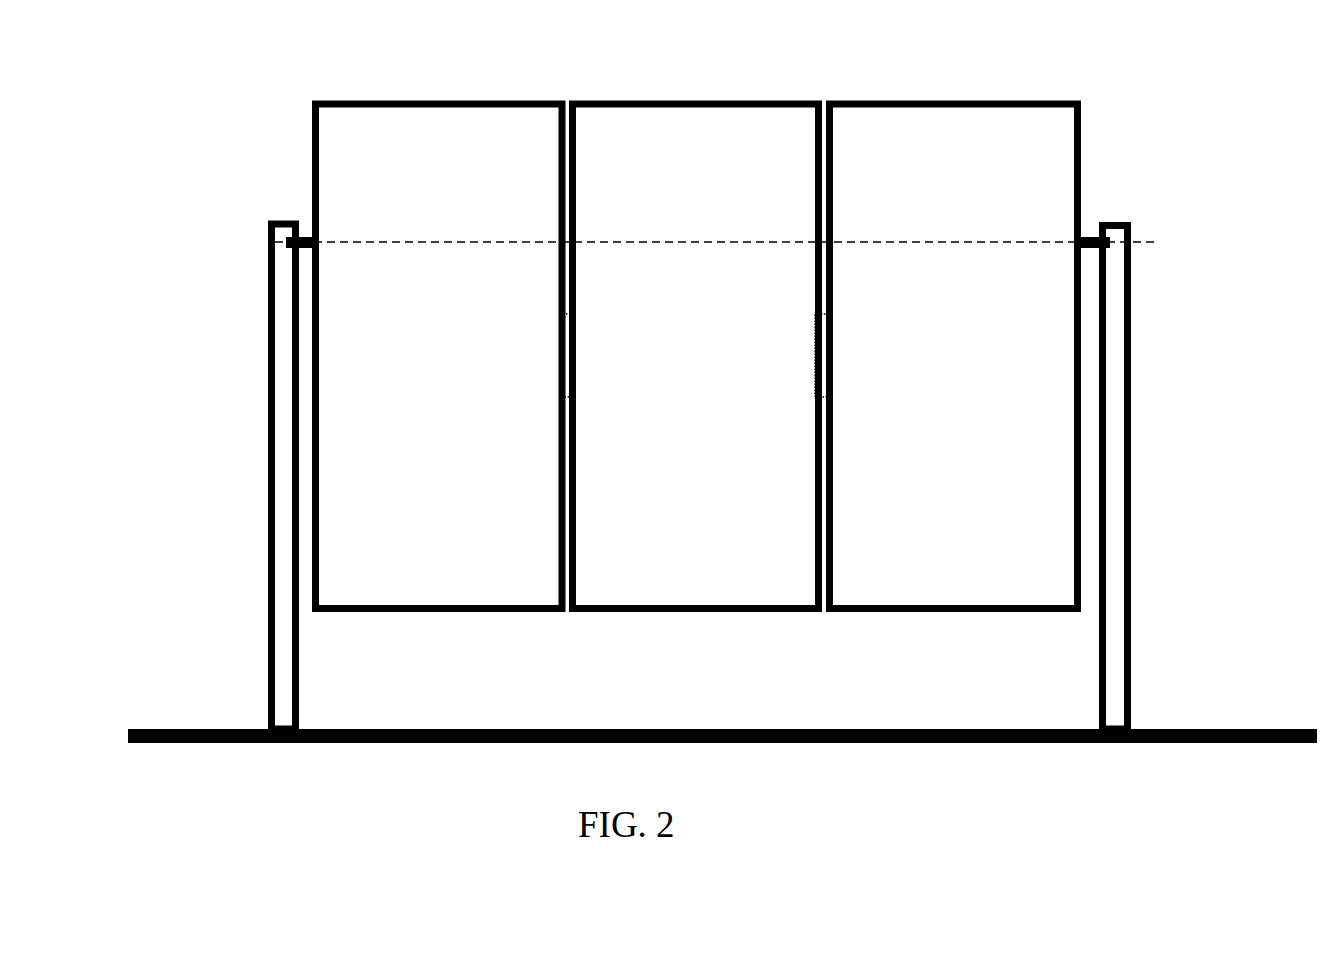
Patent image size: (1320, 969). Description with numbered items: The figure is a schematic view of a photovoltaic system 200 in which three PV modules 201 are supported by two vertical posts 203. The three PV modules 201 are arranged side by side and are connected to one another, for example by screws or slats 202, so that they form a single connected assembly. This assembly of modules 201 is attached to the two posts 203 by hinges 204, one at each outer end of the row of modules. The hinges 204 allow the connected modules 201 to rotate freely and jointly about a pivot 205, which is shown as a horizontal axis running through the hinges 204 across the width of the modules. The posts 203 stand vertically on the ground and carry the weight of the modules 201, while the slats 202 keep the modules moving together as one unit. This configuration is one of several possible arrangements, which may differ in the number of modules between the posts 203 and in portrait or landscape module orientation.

The solar panel mounting system 200 is at (229, 92).
The PV module 201 is at (342, 168).
The slat 202 is at (560, 377).
The post 203 is at (283, 601).
The hinge 204 is at (292, 244).
The pivot 205 is at (360, 245).